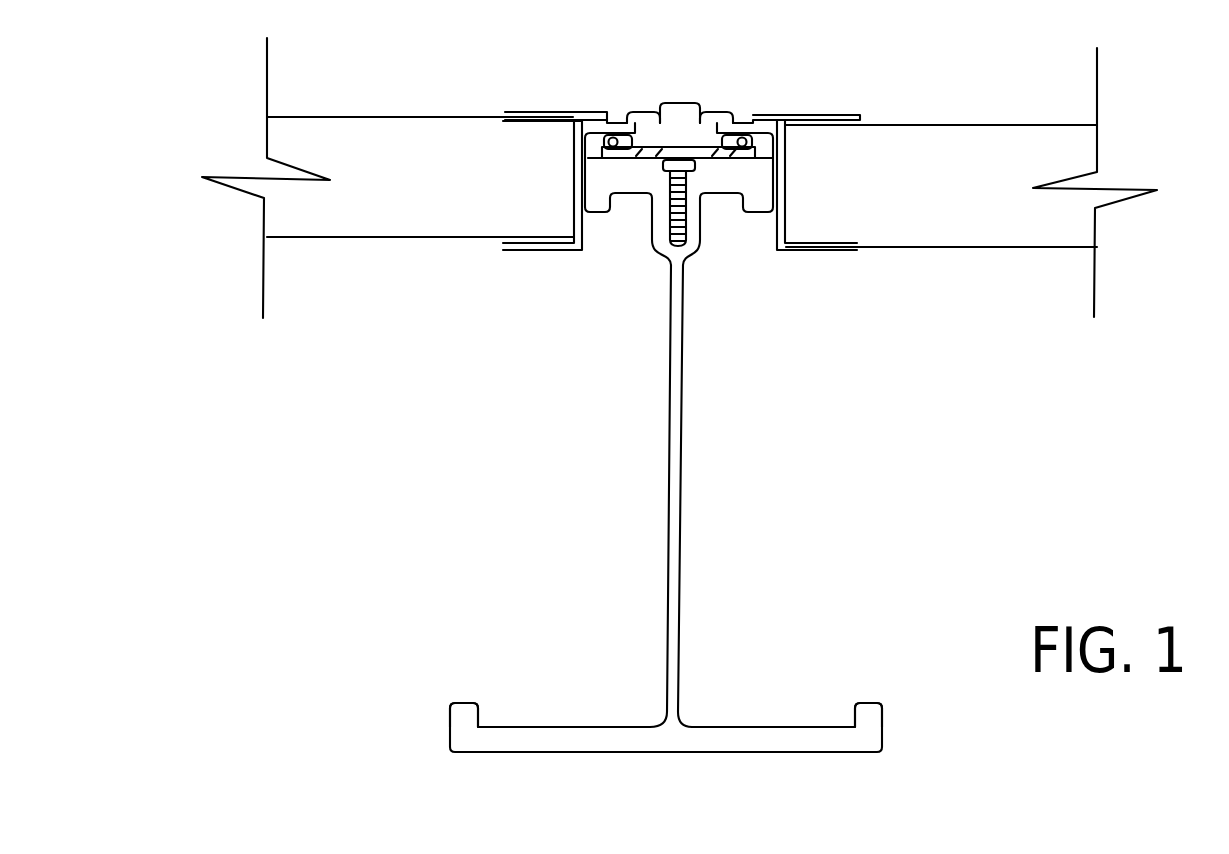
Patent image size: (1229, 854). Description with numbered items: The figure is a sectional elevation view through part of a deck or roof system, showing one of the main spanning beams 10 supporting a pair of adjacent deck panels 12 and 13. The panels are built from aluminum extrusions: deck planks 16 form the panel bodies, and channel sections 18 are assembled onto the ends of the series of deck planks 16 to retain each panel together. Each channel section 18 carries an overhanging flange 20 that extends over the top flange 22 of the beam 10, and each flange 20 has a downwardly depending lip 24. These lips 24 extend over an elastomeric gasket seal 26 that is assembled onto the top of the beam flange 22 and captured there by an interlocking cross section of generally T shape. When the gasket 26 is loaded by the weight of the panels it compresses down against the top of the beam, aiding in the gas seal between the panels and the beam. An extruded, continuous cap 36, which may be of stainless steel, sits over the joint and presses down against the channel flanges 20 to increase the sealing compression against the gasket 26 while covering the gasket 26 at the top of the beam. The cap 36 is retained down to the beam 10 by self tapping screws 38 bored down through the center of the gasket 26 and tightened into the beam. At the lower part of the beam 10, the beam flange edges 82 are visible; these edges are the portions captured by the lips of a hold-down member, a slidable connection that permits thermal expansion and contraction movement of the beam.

The main spanning beam 10 is at (763, 494).
The deck panel 12 is at (297, 60).
The deck panel 13 is at (1083, 87).
The deck plank 16 is at (427, 197).
The channel section 18 is at (569, 263).
The overhanging flange 20 is at (600, 113).
The top flange 22 is at (638, 180).
The downwardly depending lip 24 is at (664, 160).
The elastomeric gasket seal 26 is at (703, 150).
The cap 36 is at (733, 117).
The self tapping screw 38 is at (700, 95).
The beam flange edge 82 is at (455, 702).